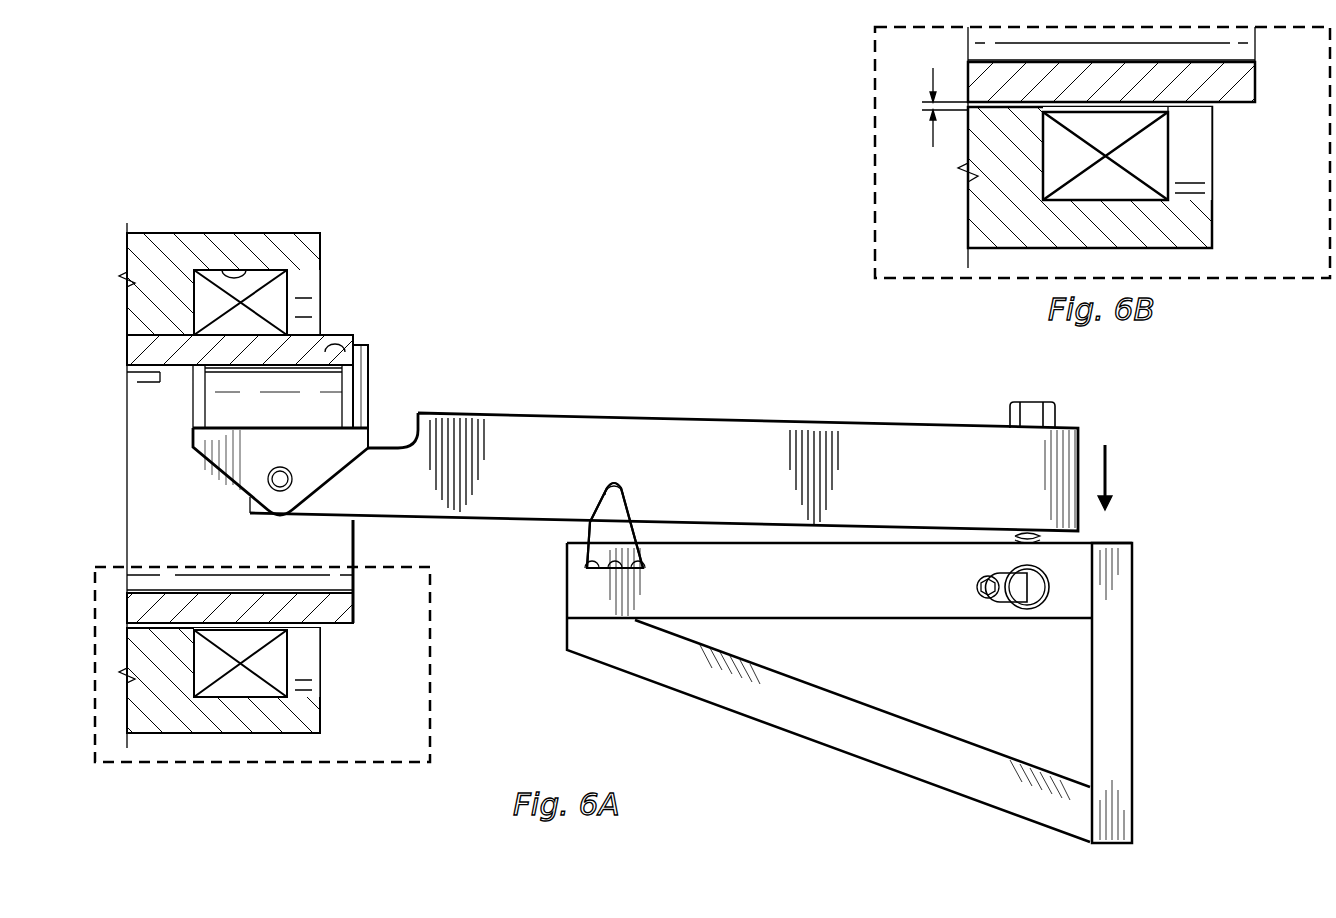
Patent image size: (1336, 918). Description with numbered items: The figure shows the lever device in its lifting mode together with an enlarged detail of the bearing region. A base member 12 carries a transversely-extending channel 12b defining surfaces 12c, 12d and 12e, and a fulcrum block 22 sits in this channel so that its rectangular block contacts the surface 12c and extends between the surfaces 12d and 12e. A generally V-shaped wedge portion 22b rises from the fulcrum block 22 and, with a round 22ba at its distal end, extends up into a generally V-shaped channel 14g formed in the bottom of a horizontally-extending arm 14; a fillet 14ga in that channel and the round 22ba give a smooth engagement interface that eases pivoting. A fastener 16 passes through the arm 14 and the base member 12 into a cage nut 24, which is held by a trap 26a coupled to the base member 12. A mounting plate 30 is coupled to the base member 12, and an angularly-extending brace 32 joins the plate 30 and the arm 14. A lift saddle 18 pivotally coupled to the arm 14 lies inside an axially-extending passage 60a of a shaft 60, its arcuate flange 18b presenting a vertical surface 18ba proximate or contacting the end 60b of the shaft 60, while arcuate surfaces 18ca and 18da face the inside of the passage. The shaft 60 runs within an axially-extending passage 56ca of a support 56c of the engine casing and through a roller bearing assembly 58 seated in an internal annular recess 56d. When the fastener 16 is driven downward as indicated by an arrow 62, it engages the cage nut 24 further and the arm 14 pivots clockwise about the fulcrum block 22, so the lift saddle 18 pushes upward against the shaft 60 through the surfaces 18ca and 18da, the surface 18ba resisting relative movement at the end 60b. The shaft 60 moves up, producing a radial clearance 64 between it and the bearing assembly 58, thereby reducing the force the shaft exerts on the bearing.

In FIG. 6A, the base member 12 is at (562, 605).
In FIG. 6A, the transversely-extending channel 12b is at (572, 552).
In FIG. 6A, the surface 12c is at (617, 572).
In FIG. 6A, the surface 12d is at (640, 572).
In FIG. 6A, the surface 12e is at (595, 572).
In FIG. 6A, the arm 14 is at (930, 425).
In FIG. 6A, the generally V-shaped channel 14g is at (638, 498).
In FIG. 6A, the fillet 14ga is at (605, 496).
In FIG. 6A, the fastener 16 is at (1062, 410).
In FIG. 6A, the lift saddle 18 is at (375, 403).
In FIG. 6A, the arcuate flange 18b is at (368, 360).
In FIG. 6A, the vertical surface 18ba is at (333, 352).
In FIG. 6A, the arcuate surface 18ca is at (330, 380).
In FIG. 6A, the arcuate surface 18da is at (178, 372).
In FIG. 6A, the fulcrum block 22 is at (652, 528).
In FIG. 6A, the generally V-shaped wedge portion 22b is at (585, 530).
In FIG. 6A, the round 22ba is at (617, 482).
In FIG. 6A, the cage nut 24 is at (1055, 598).
In FIG. 6A, the trap 26a is at (975, 586).
In FIG. 6A, the mounting plate 30 is at (1138, 716).
In FIG. 6A, the angularly-extending brace 32 is at (830, 748).
In FIG. 6A, the support 56c is at (215, 233).
In FIG. 6A, the axially-extending passage 56ca is at (135, 352).
In FIG. 6A, the internal annular recess 56d is at (228, 270).
In FIG. 6A, the roller bearing assembly 58 is at (300, 298).
In FIG. 6B, the roller bearing assembly 58 is at (1168, 170).
In FIG. 6A, the shaft 60 is at (362, 534).
In FIG. 6B, the shaft 60 is at (1235, 112).
In FIG. 6A, the axially-extending passage 60a is at (163, 521).
In FIG. 6B, the axially-extending passage 60a is at (1242, 62).
In FIG. 6A, the end 60b is at (355, 612).
In FIG. 6B, the end 60b is at (1258, 82).
In FIG. 6A, the arrow 62 is at (1110, 458).
In FIG. 6B, the radial clearance 64 is at (933, 133).